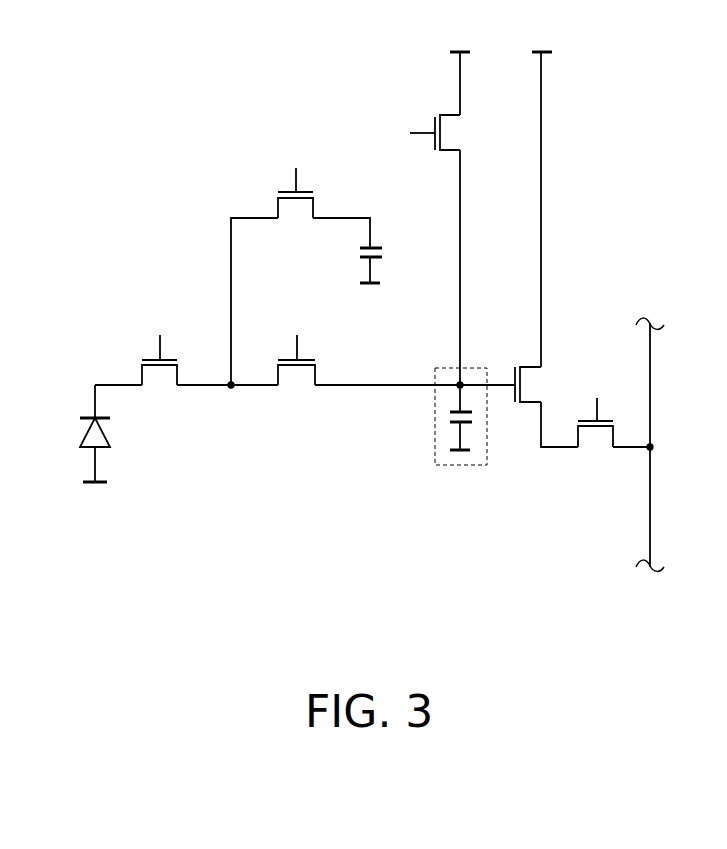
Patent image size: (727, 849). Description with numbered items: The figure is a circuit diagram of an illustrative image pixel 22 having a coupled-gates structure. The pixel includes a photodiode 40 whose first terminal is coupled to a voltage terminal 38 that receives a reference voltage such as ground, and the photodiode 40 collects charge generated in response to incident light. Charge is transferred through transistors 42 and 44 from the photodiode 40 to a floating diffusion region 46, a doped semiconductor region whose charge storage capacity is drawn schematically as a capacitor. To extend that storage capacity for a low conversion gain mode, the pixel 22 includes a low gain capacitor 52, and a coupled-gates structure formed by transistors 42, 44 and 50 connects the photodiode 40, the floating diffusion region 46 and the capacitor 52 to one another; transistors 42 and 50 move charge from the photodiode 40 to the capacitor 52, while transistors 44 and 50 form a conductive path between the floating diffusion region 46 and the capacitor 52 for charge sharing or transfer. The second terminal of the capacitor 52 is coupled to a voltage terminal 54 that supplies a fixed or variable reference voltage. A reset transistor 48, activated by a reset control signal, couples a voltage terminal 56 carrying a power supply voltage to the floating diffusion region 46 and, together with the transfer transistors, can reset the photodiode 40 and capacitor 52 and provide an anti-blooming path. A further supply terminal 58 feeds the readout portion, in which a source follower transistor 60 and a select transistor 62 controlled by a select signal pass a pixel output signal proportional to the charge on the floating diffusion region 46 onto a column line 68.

The image pixel 22 is at (80, 45).
The voltage terminal 38 is at (97, 493).
The photodiode 40 is at (70, 440).
The transistor 42 is at (157, 390).
The transistor 44 is at (296, 390).
The floating diffusion region 46 is at (460, 466).
The reset transistor 48 is at (463, 133).
The transistor 50 is at (297, 228).
The capacitor 52 is at (386, 256).
The voltage terminal 54 is at (372, 293).
The voltage terminal 56 is at (460, 45).
The supply voltage terminal 58 is at (543, 45).
The source follower transistor 60 is at (532, 410).
The select transistor 62 is at (597, 456).
The column line 68 is at (652, 398).